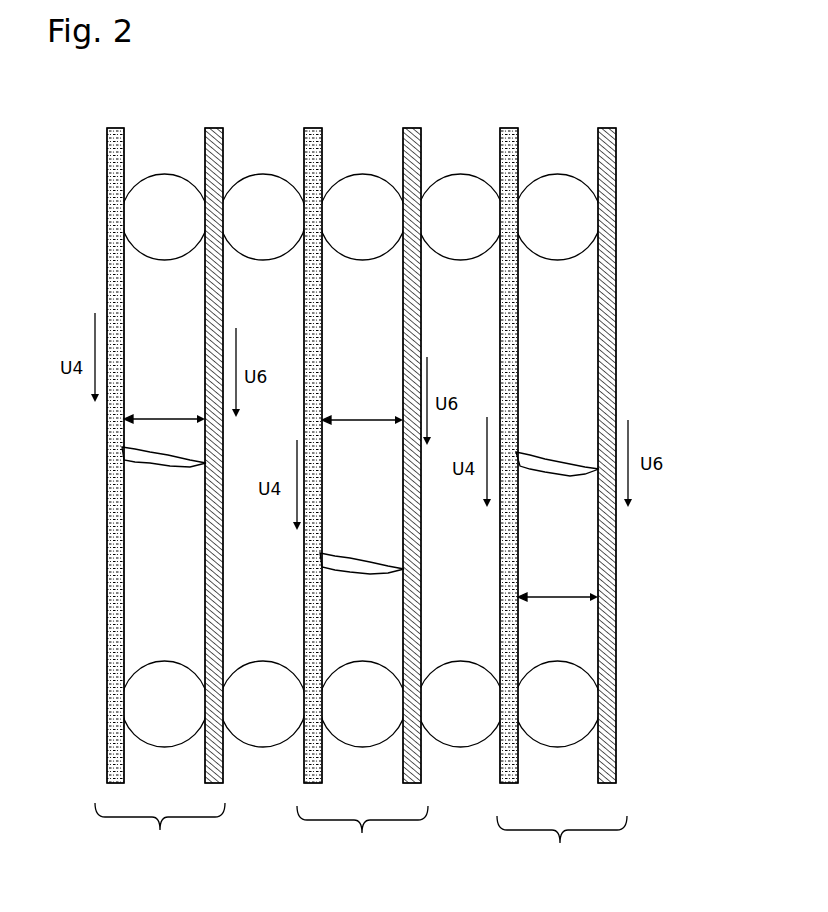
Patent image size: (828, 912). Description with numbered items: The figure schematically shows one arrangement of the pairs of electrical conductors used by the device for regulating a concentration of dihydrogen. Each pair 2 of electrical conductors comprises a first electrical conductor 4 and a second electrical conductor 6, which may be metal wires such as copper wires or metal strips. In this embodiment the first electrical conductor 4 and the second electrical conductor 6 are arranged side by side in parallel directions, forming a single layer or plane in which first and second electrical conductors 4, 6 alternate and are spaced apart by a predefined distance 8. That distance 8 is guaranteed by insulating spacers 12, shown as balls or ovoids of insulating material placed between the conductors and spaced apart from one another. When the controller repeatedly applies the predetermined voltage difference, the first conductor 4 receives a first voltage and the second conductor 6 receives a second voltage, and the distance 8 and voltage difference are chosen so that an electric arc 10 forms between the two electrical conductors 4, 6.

The pair of electrical conductors 2 is at (361, 839).
The first electrical conductor 4 is at (114, 128).
The second electrical conductor 6 is at (214, 128).
The predefined distance 8 is at (359, 498).
The electric arc 10 is at (160, 472).
The insulating spacer 12 is at (166, 261).